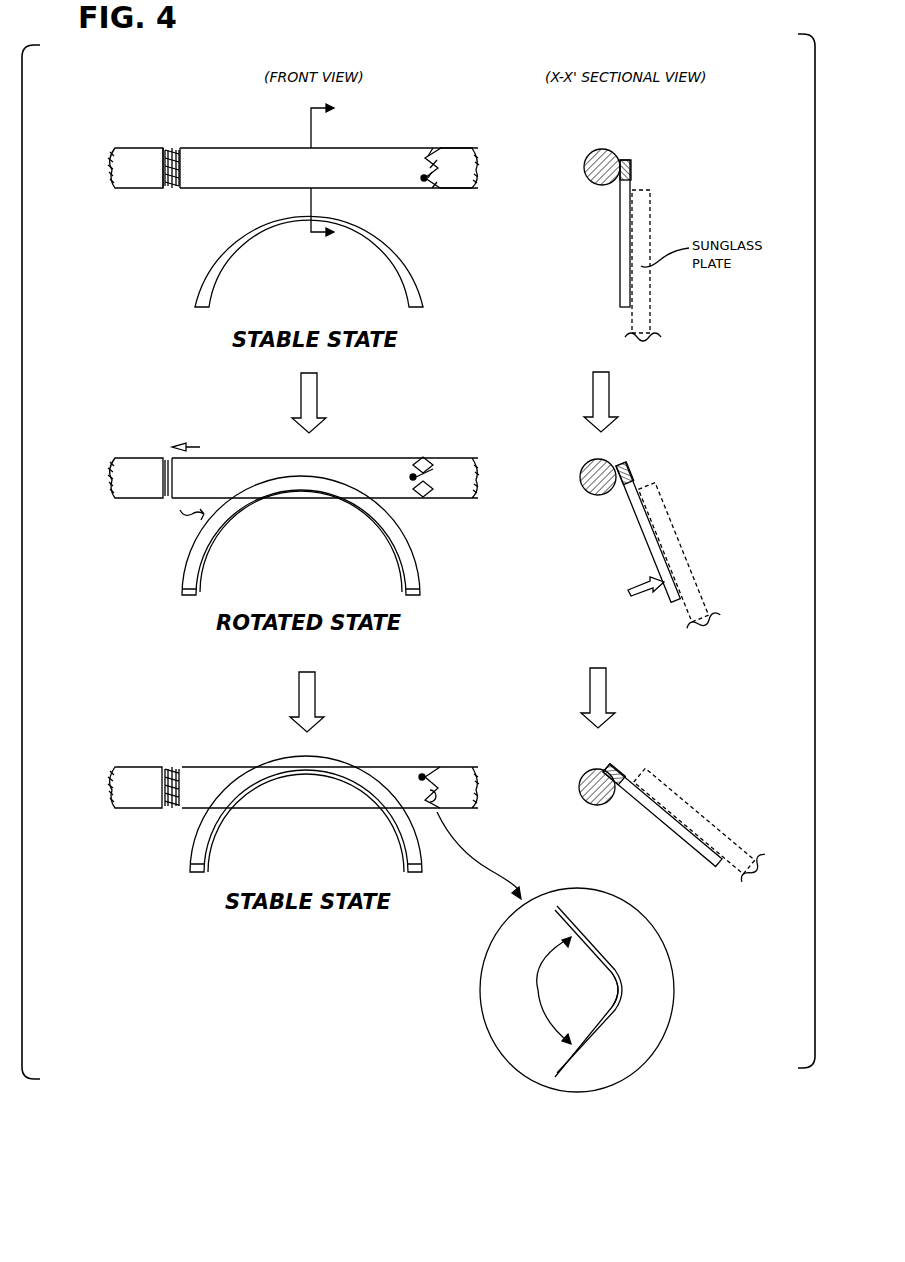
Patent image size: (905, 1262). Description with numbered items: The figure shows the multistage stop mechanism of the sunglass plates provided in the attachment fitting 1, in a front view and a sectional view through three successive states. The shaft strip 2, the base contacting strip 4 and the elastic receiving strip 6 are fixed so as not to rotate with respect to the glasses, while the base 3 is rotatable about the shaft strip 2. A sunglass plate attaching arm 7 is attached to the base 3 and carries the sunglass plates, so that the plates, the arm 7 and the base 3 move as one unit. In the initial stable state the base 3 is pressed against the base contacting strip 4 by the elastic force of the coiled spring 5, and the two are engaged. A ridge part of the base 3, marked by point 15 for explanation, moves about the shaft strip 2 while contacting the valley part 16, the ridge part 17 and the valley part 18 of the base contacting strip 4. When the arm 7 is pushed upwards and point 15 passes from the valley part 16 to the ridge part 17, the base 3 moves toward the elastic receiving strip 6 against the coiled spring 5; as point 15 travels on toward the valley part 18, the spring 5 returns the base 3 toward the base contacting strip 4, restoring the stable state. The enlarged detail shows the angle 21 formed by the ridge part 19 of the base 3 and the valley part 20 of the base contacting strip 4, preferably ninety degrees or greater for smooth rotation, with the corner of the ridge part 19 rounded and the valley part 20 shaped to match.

The attachment fitting 1 is at (400, 143).
The shaft strip 2 is at (173, 148).
The base 3 is at (258, 160).
The base contacting strip 4 is at (455, 182).
The coiled spring 5 is at (169, 190).
The elastic receiving strip 6 is at (138, 178).
The sunglass plate attaching arm 7 is at (399, 232).
The point 15 is at (437, 150).
The valley part 16 is at (440, 490).
The ridge part 17 is at (443, 470).
The valley part 18 is at (434, 462).
The ridge part 19 is at (618, 992).
The valley part 20 is at (628, 996).
The angle 21 is at (537, 983).